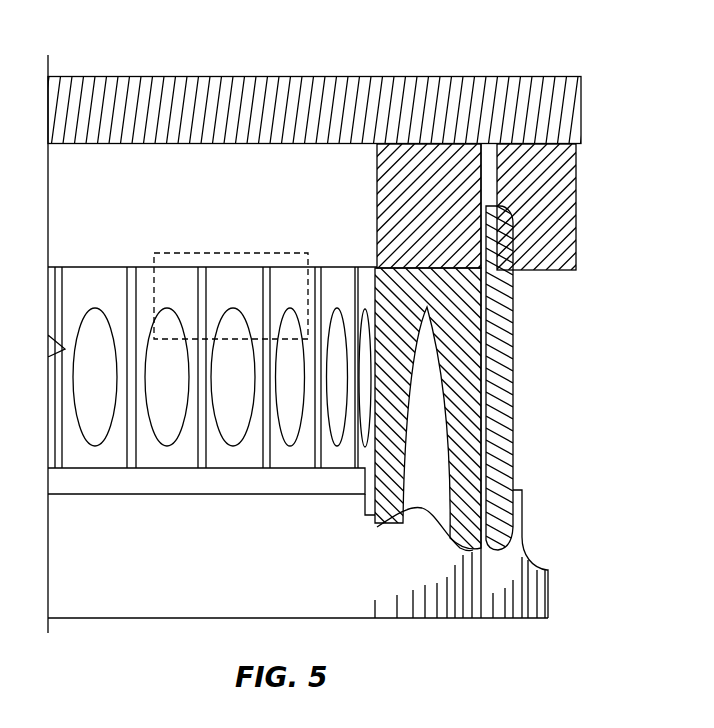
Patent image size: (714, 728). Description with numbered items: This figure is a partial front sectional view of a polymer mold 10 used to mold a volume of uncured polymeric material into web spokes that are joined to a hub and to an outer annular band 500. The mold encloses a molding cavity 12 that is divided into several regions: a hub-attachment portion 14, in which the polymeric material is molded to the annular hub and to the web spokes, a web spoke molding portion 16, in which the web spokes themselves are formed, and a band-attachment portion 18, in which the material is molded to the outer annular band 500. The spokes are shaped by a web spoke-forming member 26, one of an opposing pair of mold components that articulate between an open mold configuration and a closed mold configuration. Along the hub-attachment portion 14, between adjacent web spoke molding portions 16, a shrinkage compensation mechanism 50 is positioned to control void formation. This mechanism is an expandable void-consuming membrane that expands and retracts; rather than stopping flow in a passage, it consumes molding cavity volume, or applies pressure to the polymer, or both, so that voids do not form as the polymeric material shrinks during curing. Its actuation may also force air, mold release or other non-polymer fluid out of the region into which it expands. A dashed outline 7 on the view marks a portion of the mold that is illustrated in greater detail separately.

The polymer mold 10 is at (537, 42).
The detail region shown in FIG. 7 is at (198, 253).
The molding cavity 12 is at (203, 480).
The hub-attachment portion 14 is at (368, 507).
The web spoke molding portion 16 is at (410, 415).
The band-attachment portion 18 is at (513, 372).
The web spoke-forming member 26 is at (98, 458).
The shrinkage compensation mechanism 50 is at (293, 307).
The outer annular band 500 is at (517, 330).